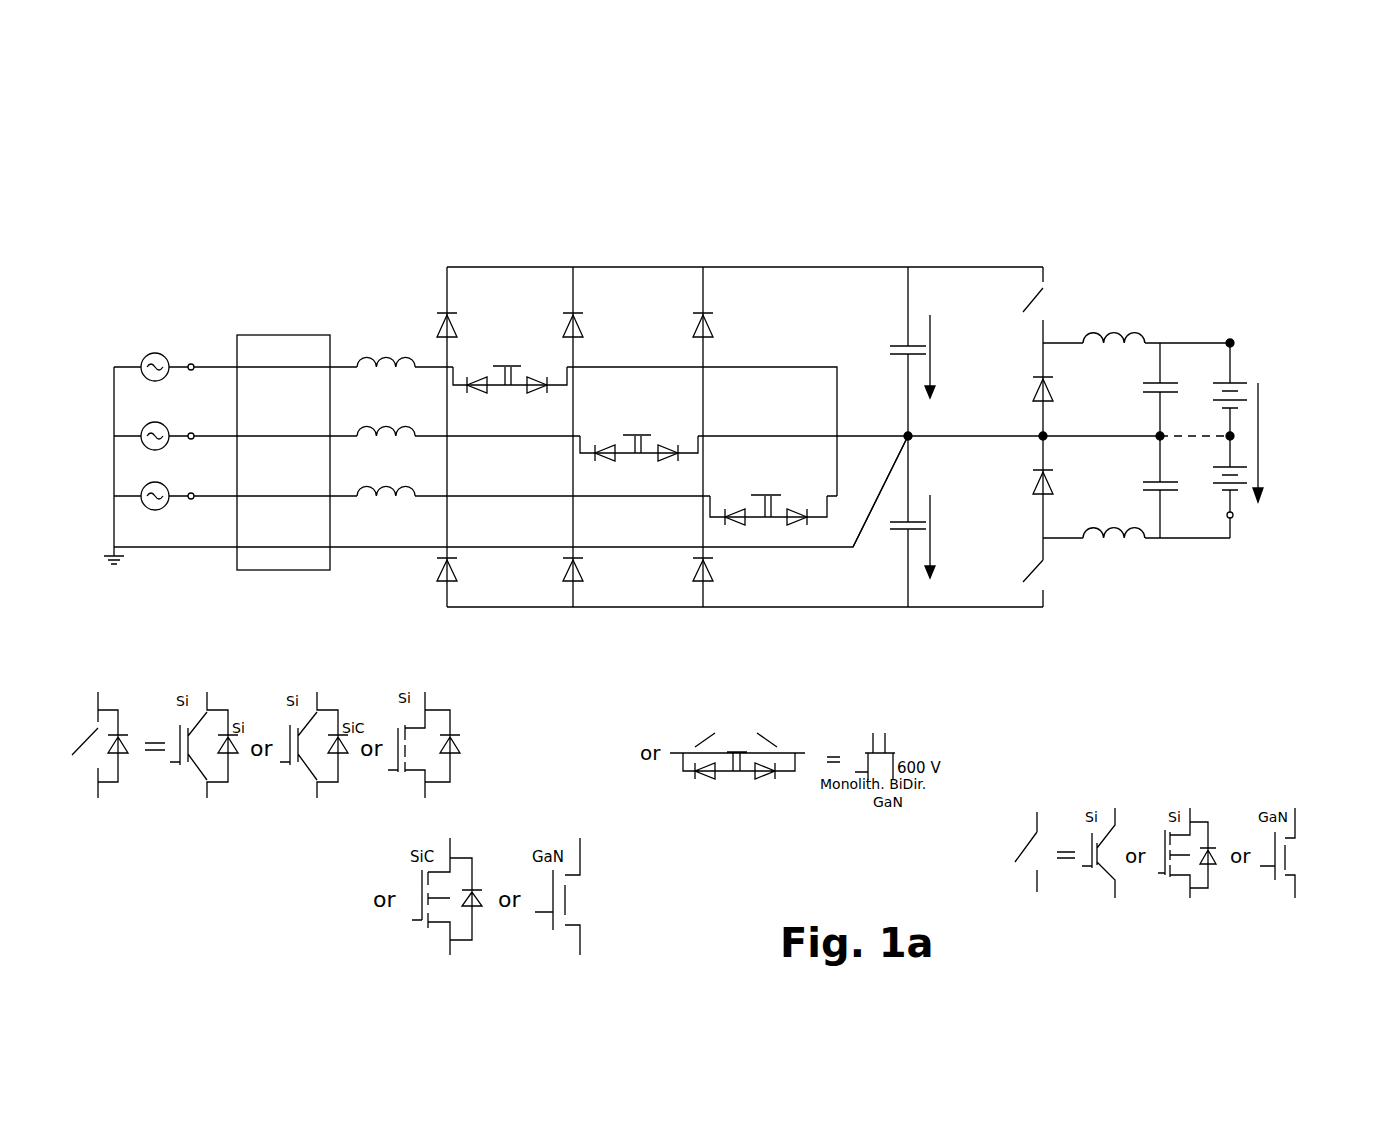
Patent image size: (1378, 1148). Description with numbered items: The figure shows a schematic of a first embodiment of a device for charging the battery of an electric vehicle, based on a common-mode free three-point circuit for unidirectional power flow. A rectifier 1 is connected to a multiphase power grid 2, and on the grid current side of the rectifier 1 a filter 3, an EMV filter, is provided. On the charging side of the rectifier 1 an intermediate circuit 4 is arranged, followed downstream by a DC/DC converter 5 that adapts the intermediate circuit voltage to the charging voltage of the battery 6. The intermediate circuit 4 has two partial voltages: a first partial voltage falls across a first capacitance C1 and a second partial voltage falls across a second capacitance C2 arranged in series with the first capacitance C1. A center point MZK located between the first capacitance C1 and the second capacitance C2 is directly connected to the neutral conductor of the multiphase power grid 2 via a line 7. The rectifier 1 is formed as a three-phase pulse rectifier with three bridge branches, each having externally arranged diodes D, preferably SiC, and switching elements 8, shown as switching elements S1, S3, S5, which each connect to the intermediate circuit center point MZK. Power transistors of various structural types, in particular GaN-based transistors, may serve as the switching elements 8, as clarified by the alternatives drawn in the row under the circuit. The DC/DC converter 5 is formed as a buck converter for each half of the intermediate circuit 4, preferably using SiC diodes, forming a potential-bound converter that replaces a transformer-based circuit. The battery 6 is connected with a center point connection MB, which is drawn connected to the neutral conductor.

The rectifier 1 is at (577, 122).
The multiphase power grid 2 is at (165, 270).
The filter 3 is at (283, 335).
The intermediate circuit 4 is at (900, 163).
The DC/DC converter 5 is at (1100, 224).
The battery 6 is at (1225, 232).
The line 7 is at (806, 549).
The switching elements 8 is at (538, 285).
The diode D is at (575, 340).
The switching element S1 is at (545, 352).
The switching element S3 is at (617, 413).
The switching element S5 is at (805, 490).
The first capacitance C1 is at (908, 351).
The second capacitance C2 is at (942, 521).
The center point MZK is at (910, 436).
The center point connection MB is at (1232, 437).